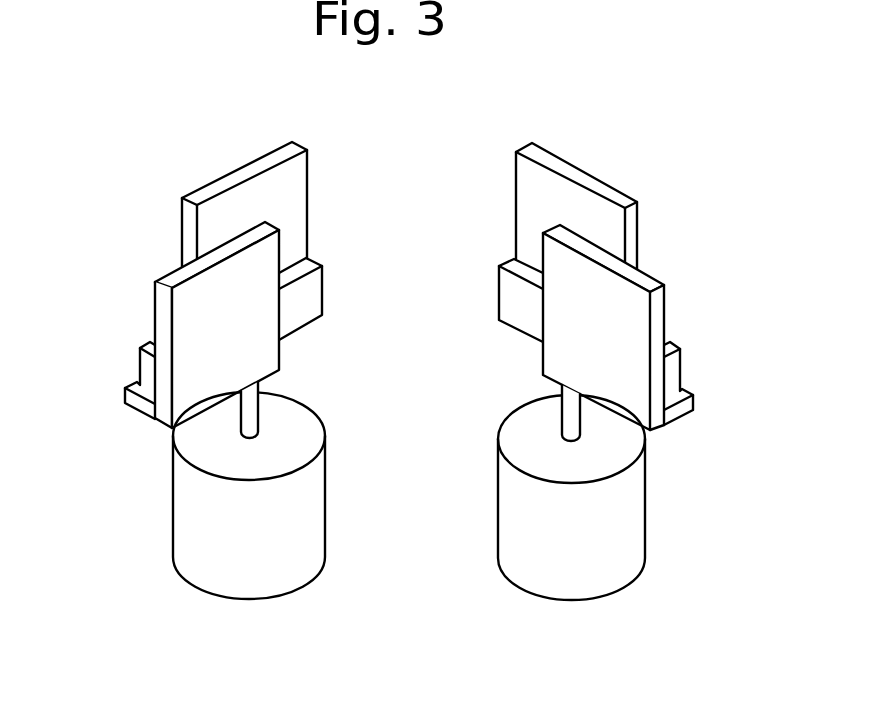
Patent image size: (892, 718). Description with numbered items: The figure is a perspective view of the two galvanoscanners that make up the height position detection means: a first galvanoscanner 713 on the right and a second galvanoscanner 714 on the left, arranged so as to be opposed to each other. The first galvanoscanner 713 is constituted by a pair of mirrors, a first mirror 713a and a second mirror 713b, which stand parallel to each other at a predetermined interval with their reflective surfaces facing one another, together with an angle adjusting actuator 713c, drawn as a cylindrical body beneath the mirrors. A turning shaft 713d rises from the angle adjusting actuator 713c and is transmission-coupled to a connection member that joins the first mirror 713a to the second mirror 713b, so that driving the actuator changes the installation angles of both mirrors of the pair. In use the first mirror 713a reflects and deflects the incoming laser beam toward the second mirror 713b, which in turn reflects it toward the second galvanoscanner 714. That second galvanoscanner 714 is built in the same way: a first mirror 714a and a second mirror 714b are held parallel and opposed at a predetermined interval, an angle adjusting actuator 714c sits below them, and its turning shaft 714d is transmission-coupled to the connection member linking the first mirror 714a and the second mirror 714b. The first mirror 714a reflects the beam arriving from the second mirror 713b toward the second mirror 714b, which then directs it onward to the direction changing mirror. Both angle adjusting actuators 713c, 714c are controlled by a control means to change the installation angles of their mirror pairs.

The first galvanoscanner 713 is at (591, 152).
The first mirror 713a is at (645, 277).
The second mirror 713b is at (627, 193).
The angle adjusting actuator 713c is at (572, 580).
The turning shaft 713d is at (571, 413).
The second galvanoscanner 714 is at (224, 156).
The first mirror 714a is at (293, 182).
The second mirror 714b is at (155, 313).
The angle adjusting actuator 714c is at (243, 582).
The turning shaft 714d is at (256, 413).